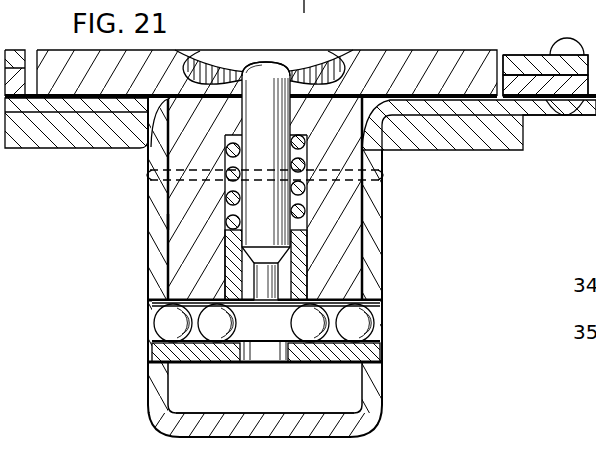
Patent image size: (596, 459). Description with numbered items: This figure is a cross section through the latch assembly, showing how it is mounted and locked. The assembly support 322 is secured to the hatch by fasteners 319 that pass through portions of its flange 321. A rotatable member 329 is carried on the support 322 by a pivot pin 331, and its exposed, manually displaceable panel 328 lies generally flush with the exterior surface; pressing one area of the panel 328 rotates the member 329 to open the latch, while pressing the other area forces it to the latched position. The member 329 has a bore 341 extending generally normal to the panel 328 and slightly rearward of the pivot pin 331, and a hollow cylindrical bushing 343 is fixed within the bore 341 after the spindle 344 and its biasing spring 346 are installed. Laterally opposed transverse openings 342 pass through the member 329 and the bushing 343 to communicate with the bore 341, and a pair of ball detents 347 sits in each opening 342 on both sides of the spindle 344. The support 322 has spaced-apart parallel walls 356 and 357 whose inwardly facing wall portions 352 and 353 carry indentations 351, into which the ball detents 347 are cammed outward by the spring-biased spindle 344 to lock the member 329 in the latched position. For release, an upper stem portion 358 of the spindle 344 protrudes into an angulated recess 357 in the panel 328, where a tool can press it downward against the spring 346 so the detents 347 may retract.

The fasteners 319 is at (568, 116).
The flange 321 is at (108, 104).
The assembly support 322 is at (148, 251).
The manually displaceable panel 328 is at (393, 52).
The rotatable member 329 is at (337, 247).
The pivot pin 331 is at (386, 176).
The bore 341 is at (228, 262).
The transverse openings 342 is at (170, 346).
The hollow cylindrical bushing 343 is at (297, 266).
The spindle 344 is at (268, 212).
The biasing spring 346 is at (300, 213).
The ball detents 347 is at (210, 323).
The indentations 351 is at (152, 340).
The inwardly facing wall portion 352 is at (170, 228).
The inwardly facing wall portion 353 is at (348, 405).
The wall 356 is at (157, 187).
The wall 357 is at (312, 68).
The upper stem portion 358 is at (264, 64).